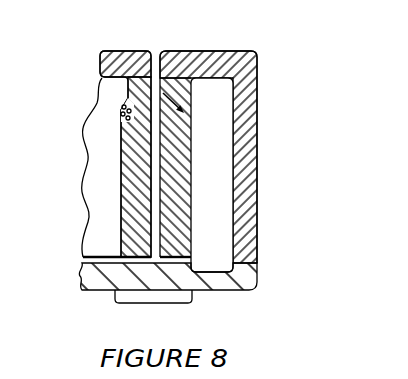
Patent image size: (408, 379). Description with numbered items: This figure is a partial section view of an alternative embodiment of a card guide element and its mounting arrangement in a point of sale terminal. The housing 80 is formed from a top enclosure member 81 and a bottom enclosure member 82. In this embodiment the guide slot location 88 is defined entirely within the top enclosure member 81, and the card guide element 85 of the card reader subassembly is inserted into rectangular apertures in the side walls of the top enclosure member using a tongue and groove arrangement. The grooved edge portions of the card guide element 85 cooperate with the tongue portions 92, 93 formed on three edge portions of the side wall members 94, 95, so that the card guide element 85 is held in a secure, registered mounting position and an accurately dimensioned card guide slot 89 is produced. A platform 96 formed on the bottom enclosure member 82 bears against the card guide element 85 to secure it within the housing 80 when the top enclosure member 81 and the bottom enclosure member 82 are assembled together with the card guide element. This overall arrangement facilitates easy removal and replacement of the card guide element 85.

The housing 80 is at (57, 177).
The top enclosure member 81 is at (121, 46).
The bottom enclosure member 82 is at (110, 278).
The card guide element 85 is at (188, 100).
The guide slot location 88 is at (157, 64).
The card guide slot 89 is at (155, 153).
The tongue portion 92 is at (121, 121).
The tongue portion 93 is at (192, 127).
The side wall member 94 is at (121, 197).
The side wall member 95 is at (172, 202).
The platform 96 is at (170, 265).